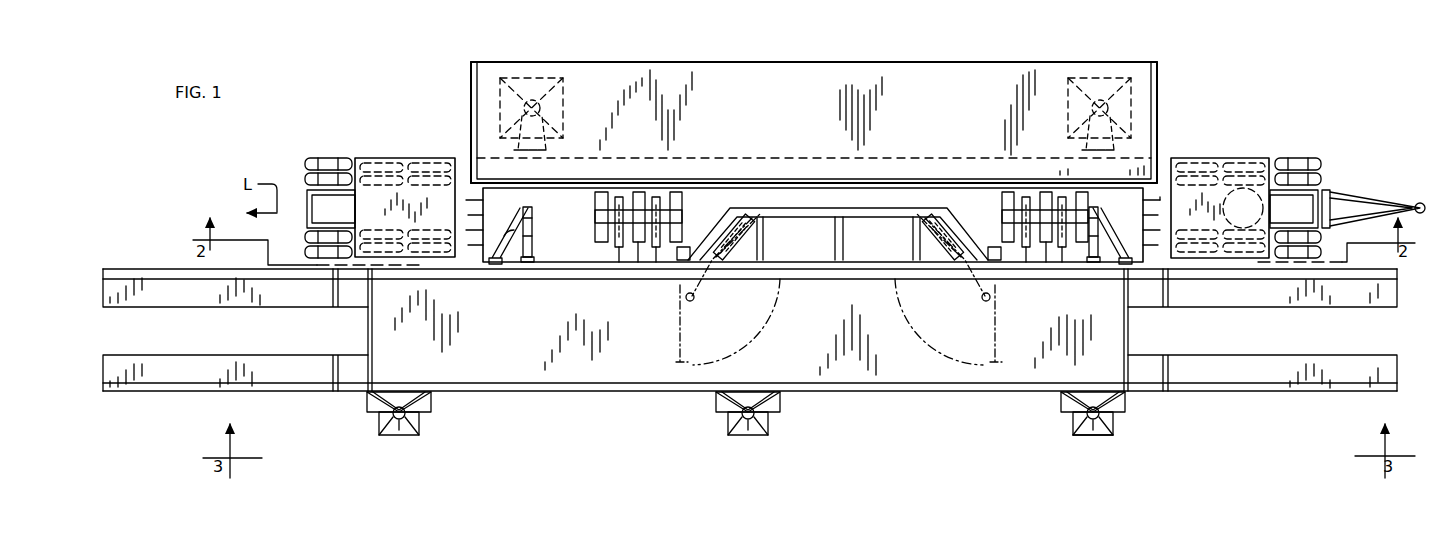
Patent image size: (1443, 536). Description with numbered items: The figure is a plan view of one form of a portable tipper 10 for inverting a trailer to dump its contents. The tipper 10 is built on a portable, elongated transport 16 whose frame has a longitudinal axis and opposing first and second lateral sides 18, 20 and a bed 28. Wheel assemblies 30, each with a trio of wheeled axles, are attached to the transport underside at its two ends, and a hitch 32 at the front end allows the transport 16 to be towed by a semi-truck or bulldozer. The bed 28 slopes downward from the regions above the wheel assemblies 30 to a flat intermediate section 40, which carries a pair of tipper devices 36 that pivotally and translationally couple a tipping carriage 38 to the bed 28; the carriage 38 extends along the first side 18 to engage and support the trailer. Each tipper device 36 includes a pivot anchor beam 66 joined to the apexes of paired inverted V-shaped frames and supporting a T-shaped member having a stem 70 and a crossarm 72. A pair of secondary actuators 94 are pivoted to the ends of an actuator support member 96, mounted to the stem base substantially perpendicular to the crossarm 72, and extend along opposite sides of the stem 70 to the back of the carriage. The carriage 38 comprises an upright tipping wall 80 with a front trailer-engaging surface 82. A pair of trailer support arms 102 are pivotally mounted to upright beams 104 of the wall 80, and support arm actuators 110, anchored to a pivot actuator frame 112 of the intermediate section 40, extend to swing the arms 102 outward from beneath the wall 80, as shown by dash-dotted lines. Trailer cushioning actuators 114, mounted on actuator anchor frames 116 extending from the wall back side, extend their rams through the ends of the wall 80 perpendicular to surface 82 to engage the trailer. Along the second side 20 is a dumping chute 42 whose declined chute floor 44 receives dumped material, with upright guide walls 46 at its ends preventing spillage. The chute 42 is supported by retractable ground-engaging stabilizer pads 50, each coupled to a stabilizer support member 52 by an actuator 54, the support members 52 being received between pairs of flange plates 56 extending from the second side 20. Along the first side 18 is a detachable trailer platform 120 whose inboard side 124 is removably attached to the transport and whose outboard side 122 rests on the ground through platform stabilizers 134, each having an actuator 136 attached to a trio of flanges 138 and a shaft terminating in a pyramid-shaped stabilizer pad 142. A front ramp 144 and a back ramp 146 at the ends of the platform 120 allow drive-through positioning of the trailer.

The tipper 10 is at (1262, 112).
The transport 16 is at (1262, 156).
The first lateral side 18 is at (823, 264).
The second lateral side 20 is at (914, 158).
The bed 28 is at (372, 212).
The wheel assemblies 30 is at (312, 160).
The hitch 32 is at (1371, 197).
The tipper devices 36 is at (998, 198).
The tipping carriage 38 is at (570, 263).
The intermediate section 40 is at (480, 205).
The dumping chute 42 is at (924, 62).
The chute floor 44 is at (889, 95).
The guide walls 46 is at (472, 76).
The stabilizer pads 50 is at (546, 78).
The stabilizer support member 52 is at (506, 96).
The actuator 54 is at (535, 98).
The flange plates 56 is at (512, 150).
The pivot anchor beam 66 is at (1066, 210).
The stem 70 is at (1003, 214).
The crossarm 72 is at (1040, 246).
The tipping wall 80 is at (877, 270).
The trailer-engaging surface 82 is at (706, 92).
The secondary actuators 94 is at (1032, 245).
The actuator support member 96 is at (1033, 188).
The trailer support arms 102 is at (682, 316).
The upright beams 104 is at (690, 259).
The support arm actuators 110 is at (746, 252).
The pivot actuator frame 112 is at (802, 209).
The trailer cushioning actuators 114 is at (530, 246).
The actuator anchor frame 116 is at (504, 236).
The trailer platform 120 is at (862, 394).
The outboard side 122 is at (568, 392).
The inboard side 124 is at (433, 268).
The platform stabilizers 134 is at (1100, 438).
The actuator 136 is at (1090, 419).
The flanges 138 is at (1069, 412).
The stabilizer pad 142 is at (1116, 425).
The front ramp 144 is at (1242, 308).
The back ramp 146 is at (177, 308).